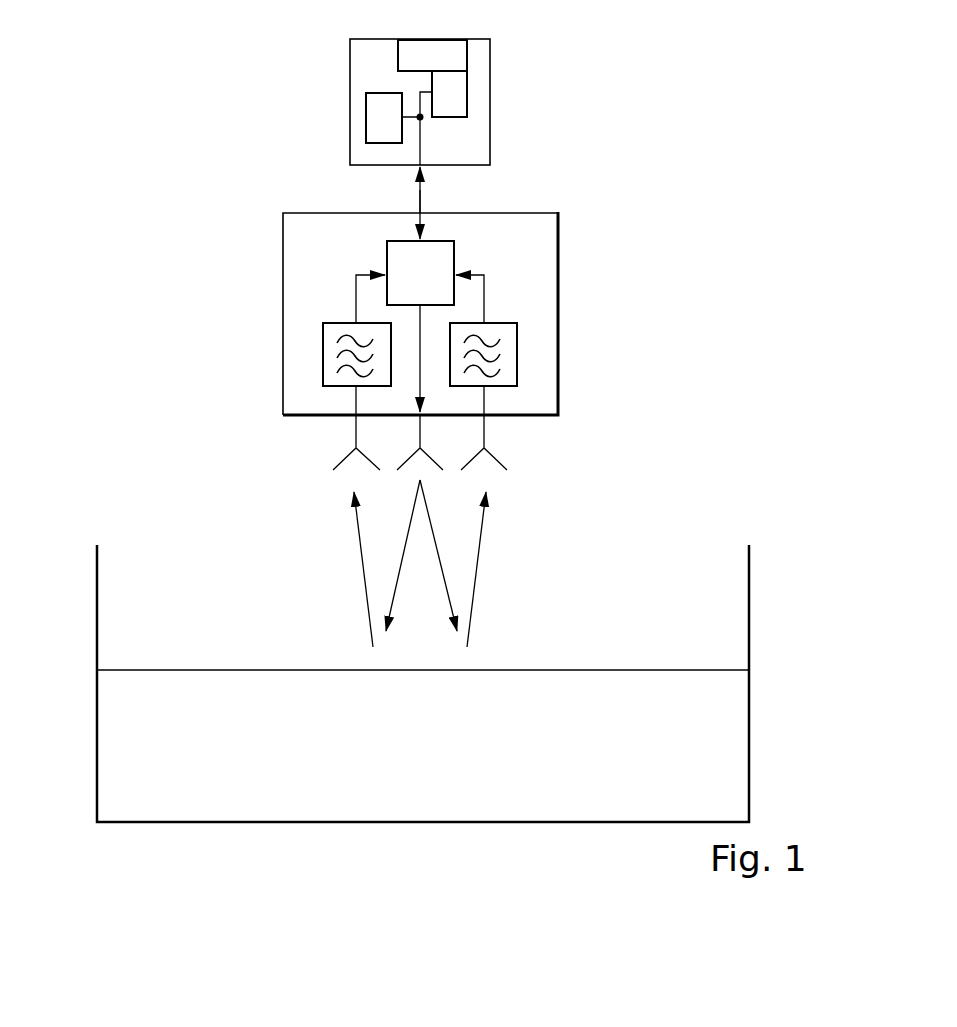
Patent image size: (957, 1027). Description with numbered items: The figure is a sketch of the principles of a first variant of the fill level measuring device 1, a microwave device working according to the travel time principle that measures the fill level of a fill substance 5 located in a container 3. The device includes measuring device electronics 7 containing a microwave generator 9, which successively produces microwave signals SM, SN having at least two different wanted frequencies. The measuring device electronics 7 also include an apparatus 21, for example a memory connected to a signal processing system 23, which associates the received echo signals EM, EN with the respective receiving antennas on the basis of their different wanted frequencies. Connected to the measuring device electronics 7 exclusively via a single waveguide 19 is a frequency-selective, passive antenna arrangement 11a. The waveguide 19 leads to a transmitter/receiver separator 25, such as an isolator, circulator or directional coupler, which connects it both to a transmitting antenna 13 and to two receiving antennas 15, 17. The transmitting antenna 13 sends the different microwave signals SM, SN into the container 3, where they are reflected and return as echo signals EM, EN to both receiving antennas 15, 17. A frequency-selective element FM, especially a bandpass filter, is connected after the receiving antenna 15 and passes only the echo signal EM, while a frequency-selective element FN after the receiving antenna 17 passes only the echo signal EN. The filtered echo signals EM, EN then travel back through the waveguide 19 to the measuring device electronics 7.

The fill level measuring device 1 is at (192, 63).
The container 3 is at (97, 595).
The fill substance 5 is at (432, 757).
The measuring device electronics 7 is at (358, 69).
The microwave generator 9 is at (394, 130).
The antenna arrangement 11a is at (543, 227).
The transmitting antenna 13 is at (433, 461).
The receiving antenna 15 is at (347, 457).
The receiving antenna 17 is at (498, 462).
The waveguide 19 is at (418, 197).
The apparatus 21 is at (463, 103).
The signal processing system 23 is at (444, 65).
The transmitter/receiver separator 25 is at (437, 287).
The echo signal EM is at (352, 293).
The echo signal EN is at (486, 298).
The frequency-selective element FM is at (328, 353).
The frequency-selective element FN is at (508, 350).
The microwave signal SM is at (418, 390).